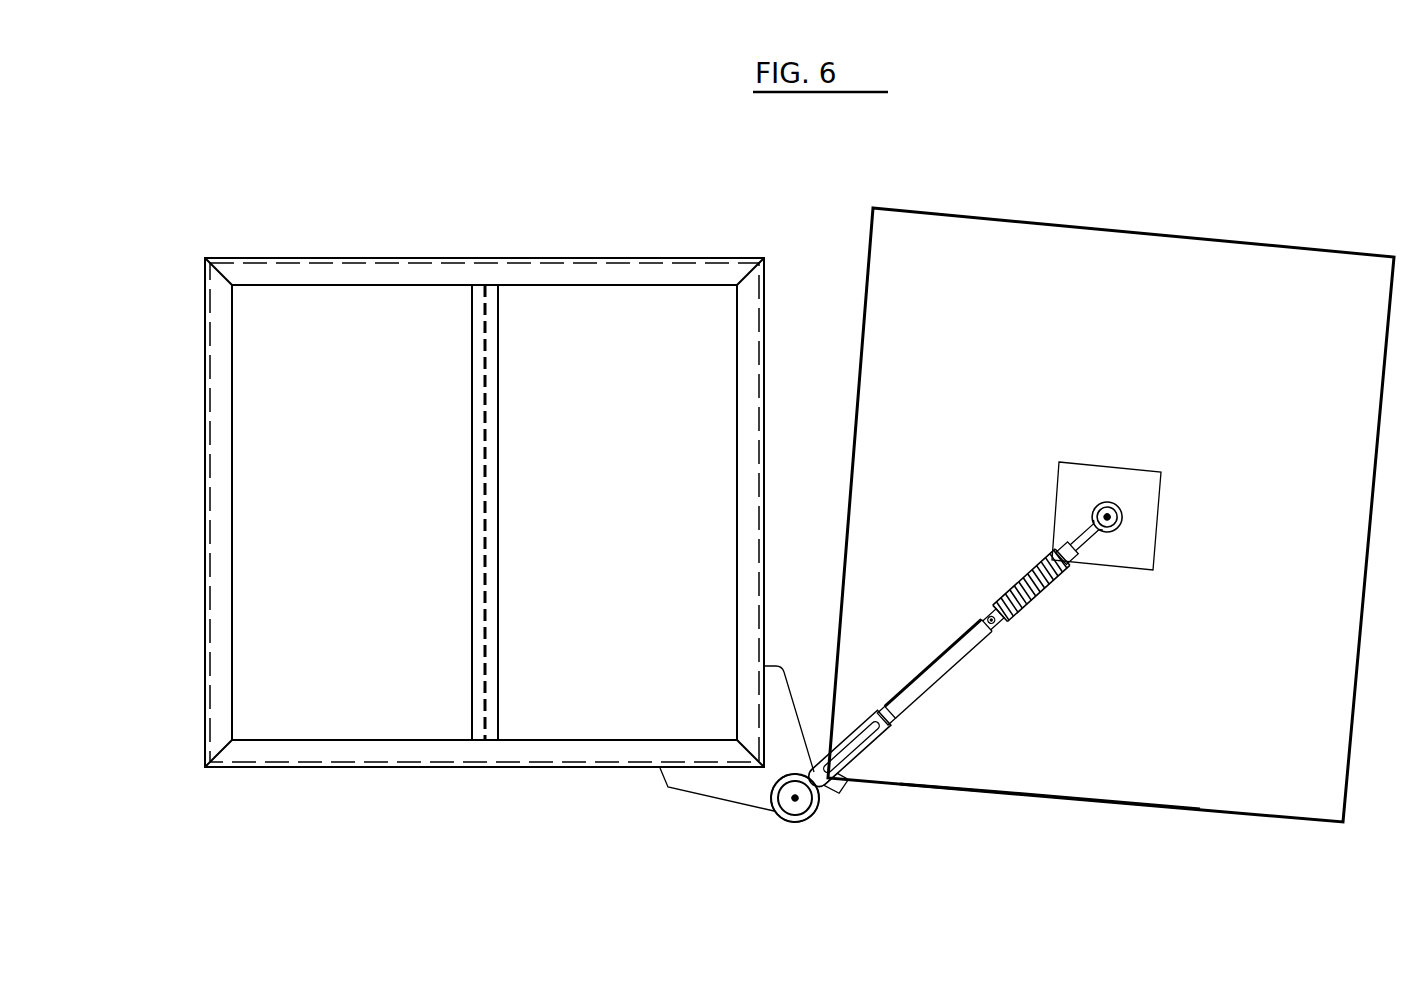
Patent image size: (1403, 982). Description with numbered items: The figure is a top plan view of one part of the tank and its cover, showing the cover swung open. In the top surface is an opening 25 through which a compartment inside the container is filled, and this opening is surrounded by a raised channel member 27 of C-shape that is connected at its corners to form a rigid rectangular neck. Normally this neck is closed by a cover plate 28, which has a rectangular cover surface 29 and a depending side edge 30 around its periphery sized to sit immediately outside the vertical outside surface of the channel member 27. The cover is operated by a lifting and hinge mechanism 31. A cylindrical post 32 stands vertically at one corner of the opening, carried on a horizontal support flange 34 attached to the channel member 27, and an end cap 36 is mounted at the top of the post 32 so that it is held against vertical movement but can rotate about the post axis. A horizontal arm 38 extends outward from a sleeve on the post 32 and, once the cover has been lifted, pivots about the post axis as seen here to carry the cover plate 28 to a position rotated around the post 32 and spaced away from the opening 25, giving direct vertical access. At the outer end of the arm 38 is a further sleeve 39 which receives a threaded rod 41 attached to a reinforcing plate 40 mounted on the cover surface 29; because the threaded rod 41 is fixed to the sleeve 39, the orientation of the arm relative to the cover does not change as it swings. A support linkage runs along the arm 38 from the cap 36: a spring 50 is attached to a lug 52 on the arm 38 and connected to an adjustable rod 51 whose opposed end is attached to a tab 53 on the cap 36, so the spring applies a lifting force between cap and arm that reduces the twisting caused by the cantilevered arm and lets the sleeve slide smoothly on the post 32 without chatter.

The opening 25 is at (345, 613).
The raised channel member 27 is at (553, 738).
The cover plate 28 is at (975, 800).
The cover surface 29 is at (1216, 713).
The depending side edge 30 is at (1195, 808).
The lifting and hinge mechanism 31 is at (968, 717).
The post 32 is at (792, 803).
The horizontal support flange 34 is at (668, 787).
The end cap 36 is at (818, 812).
The horizontal arm 38 is at (902, 692).
The further sleeve 39 is at (1118, 508).
The reinforcing plate 40 is at (1155, 548).
The threaded rod 41 is at (1098, 510).
The spring 50 is at (1032, 572).
The adjustable rod 51 is at (962, 650).
The lug 52 is at (1072, 562).
The tab 53 is at (822, 786).